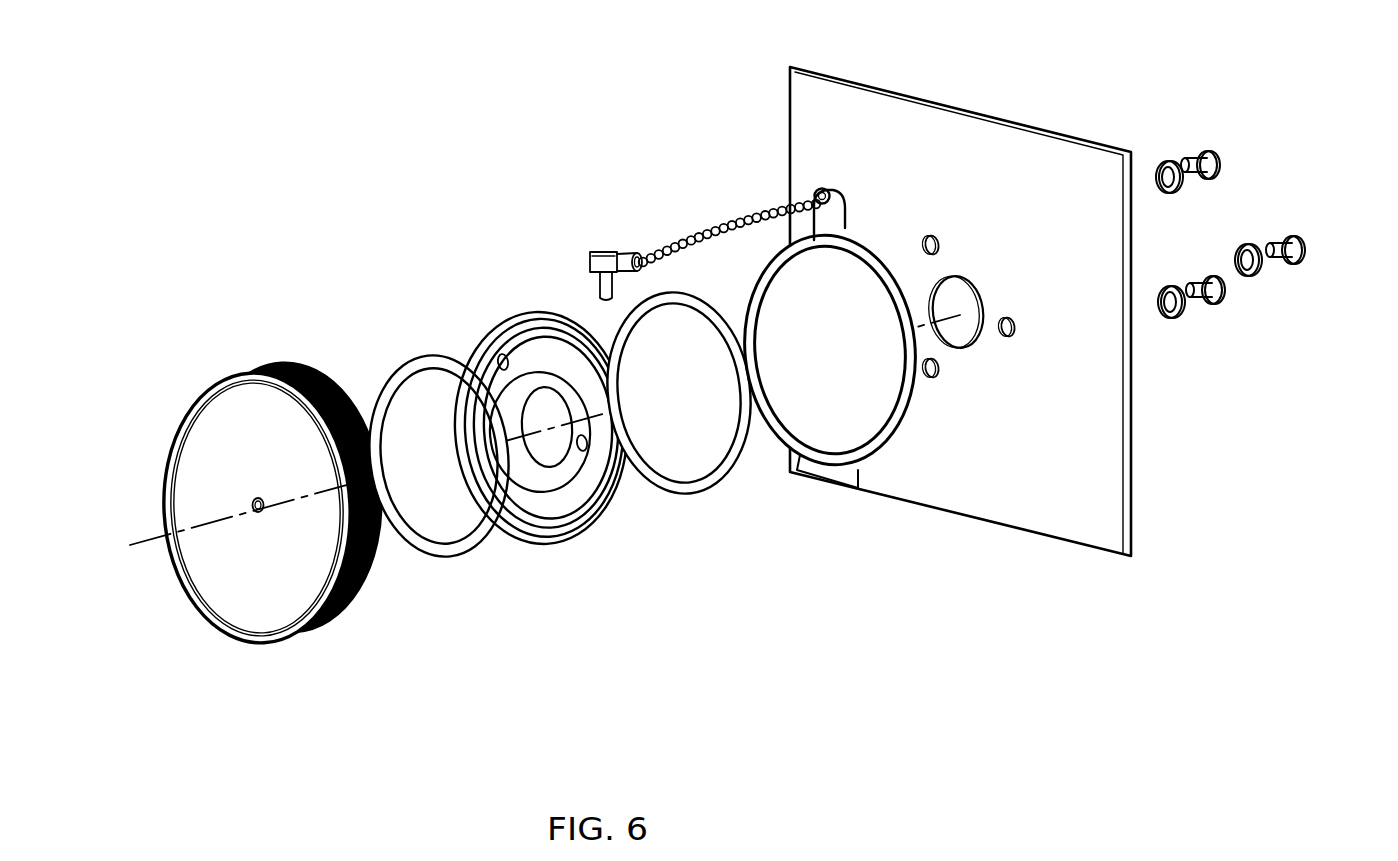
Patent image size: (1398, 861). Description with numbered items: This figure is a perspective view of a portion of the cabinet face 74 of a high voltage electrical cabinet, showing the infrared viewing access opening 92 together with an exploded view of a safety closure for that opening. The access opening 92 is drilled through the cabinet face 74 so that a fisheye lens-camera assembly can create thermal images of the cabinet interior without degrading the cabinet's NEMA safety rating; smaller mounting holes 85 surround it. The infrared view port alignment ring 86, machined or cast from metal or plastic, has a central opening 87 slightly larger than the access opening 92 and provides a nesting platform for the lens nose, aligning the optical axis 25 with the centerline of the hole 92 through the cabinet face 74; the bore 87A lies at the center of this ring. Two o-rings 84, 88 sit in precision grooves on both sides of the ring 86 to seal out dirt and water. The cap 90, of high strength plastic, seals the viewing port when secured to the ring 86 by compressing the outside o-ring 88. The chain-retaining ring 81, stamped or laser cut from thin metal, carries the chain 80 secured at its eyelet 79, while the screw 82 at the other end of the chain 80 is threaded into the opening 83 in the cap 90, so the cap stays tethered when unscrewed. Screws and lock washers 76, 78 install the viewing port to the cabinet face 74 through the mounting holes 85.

The optical axis 25 is at (821, 355).
The cabinet face 74 is at (1038, 493).
The screws 76 is at (1290, 340).
The lock washers 78 is at (1277, 239).
The eyelet 79 is at (829, 192).
The chain 80 is at (710, 233).
The chain-retaining ring 81 is at (855, 470).
The screw 82 is at (597, 275).
The opening 83 is at (253, 517).
The o-ring 84 is at (693, 493).
The mounting holes 85 is at (940, 243).
The infrared view port alignment ring 86 is at (537, 553).
The central opening 87 is at (517, 396).
The bore 87A is at (541, 471).
The outside o-ring 88 is at (387, 363).
The cap 90 is at (225, 423).
The access opening 92 is at (980, 292).